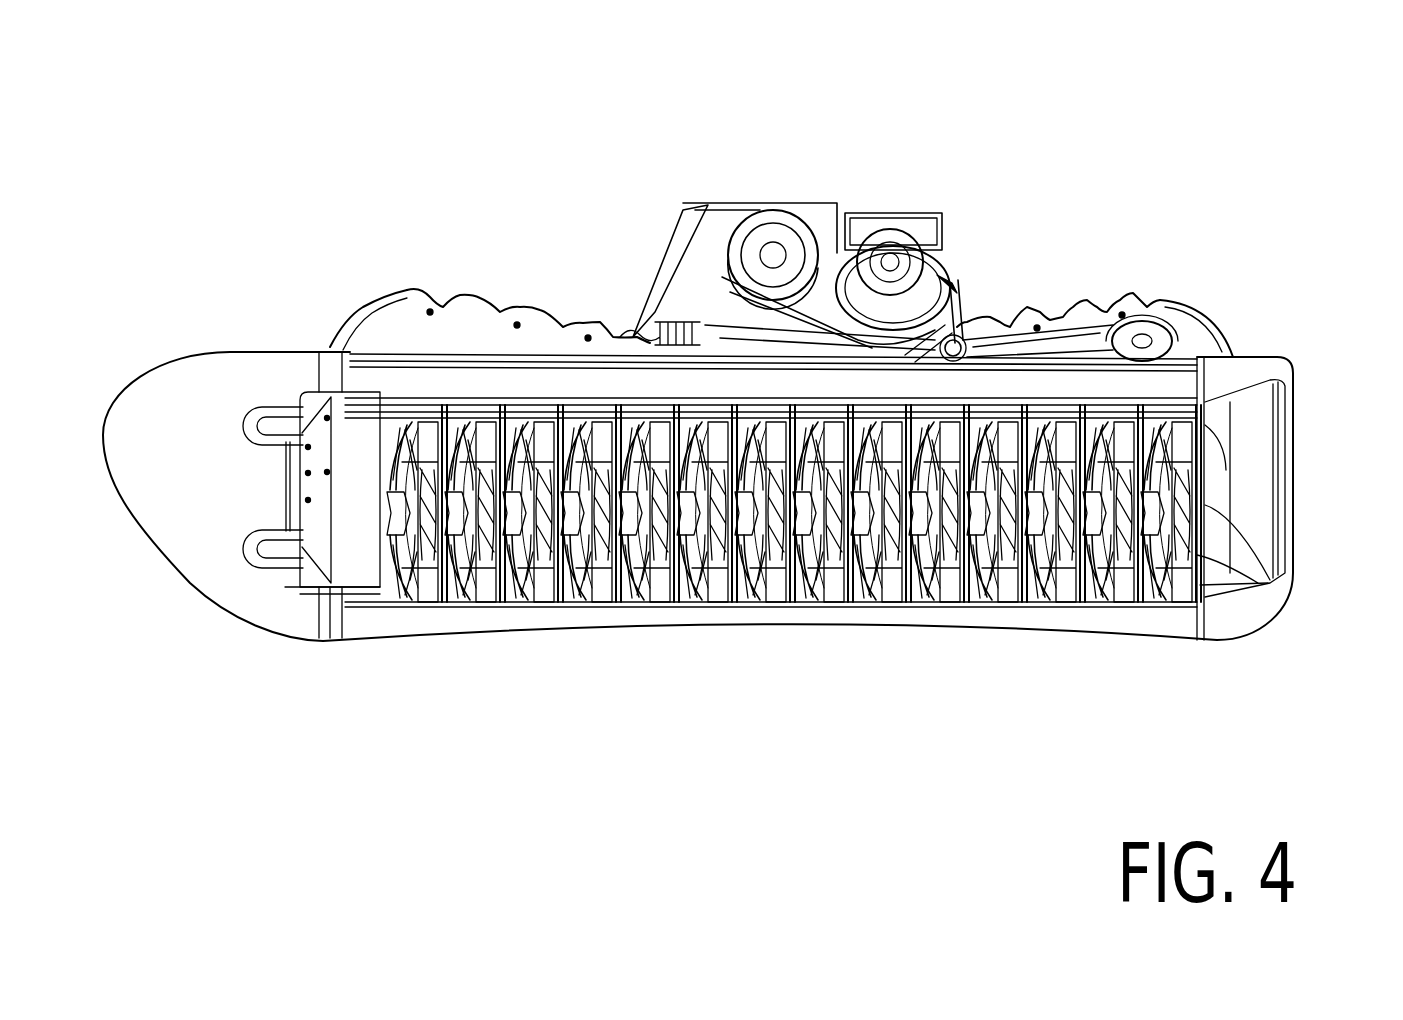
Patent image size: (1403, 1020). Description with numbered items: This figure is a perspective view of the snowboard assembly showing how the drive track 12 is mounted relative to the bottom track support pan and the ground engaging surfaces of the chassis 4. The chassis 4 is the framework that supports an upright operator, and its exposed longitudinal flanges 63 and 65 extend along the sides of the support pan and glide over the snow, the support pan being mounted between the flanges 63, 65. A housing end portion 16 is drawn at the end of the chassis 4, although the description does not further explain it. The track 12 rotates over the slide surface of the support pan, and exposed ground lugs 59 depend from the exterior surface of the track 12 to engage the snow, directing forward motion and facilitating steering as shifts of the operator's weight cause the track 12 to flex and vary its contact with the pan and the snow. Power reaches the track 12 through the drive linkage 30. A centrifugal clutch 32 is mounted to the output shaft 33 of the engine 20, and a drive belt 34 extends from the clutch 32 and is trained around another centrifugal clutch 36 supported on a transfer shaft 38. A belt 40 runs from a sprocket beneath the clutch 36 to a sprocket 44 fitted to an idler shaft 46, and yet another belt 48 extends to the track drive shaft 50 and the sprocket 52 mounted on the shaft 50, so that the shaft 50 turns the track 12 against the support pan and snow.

The chassis 4 is at (1230, 340).
The drive track 12 is at (997, 598).
The housing end cap 16 is at (365, 383).
The engine 20 is at (893, 212).
The drive linkage 30 is at (950, 258).
The centrifugal clutch 32 is at (703, 277).
The output shaft 33 is at (750, 235).
The drive belt 34 is at (835, 205).
The centrifugal clutch 36 is at (948, 250).
The transfer shaft 38 is at (900, 245).
The belt 40 is at (957, 327).
The sprocket 44 is at (1000, 320).
The idler shaft 46 is at (962, 340).
The belt 48 is at (1172, 320).
The track drive shaft 50 is at (1180, 330).
The sprocket 52 is at (1214, 318).
The ground lugs 59 is at (573, 597).
The longitudinal flange 63 is at (776, 620).
The longitudinal flange 65 is at (495, 392).